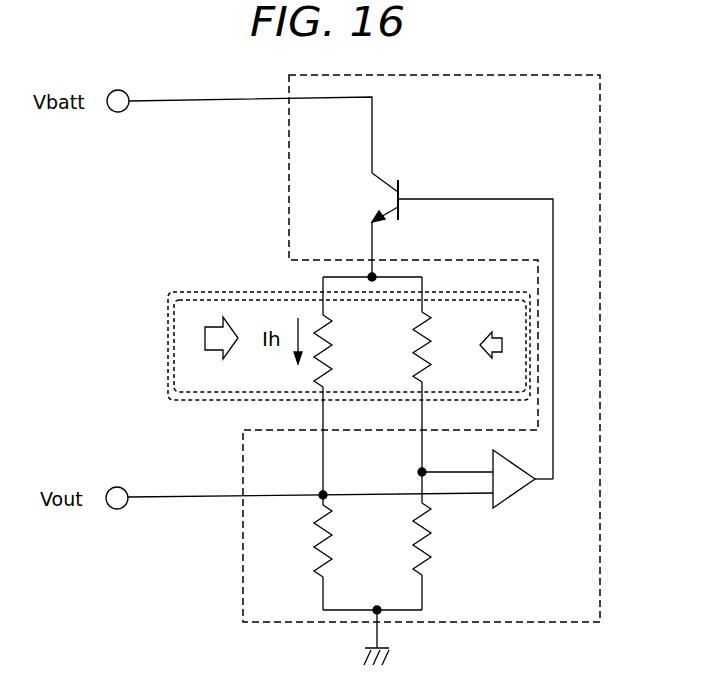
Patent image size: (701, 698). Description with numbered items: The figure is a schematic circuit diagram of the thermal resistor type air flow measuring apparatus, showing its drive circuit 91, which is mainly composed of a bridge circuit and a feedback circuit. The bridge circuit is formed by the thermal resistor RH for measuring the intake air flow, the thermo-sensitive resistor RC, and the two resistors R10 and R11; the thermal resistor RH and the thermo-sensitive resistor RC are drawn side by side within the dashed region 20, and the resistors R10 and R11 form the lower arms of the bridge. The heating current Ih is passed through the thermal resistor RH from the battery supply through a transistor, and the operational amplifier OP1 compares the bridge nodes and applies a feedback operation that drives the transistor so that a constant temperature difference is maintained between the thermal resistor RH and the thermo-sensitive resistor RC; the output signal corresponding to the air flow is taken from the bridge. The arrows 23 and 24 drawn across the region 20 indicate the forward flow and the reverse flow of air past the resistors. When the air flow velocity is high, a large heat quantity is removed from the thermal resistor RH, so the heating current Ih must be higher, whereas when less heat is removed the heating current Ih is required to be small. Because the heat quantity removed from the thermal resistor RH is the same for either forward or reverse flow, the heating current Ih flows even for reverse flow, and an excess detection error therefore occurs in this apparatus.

The sensor element (heater/thermistor chip) 20 is at (190, 404).
The air flow direction (forward) arrow 23 is at (203, 327).
The air flow direction (reverse) arrow 24 is at (490, 362).
The drive circuit 91 is at (603, 492).
The thermal resistor RH is at (340, 386).
The thermo-sensitive resistor RC is at (437, 374).
The resistor R10 is at (349, 552).
The resistor R11 is at (449, 541).
The operational amplifier OP1 is at (510, 498).